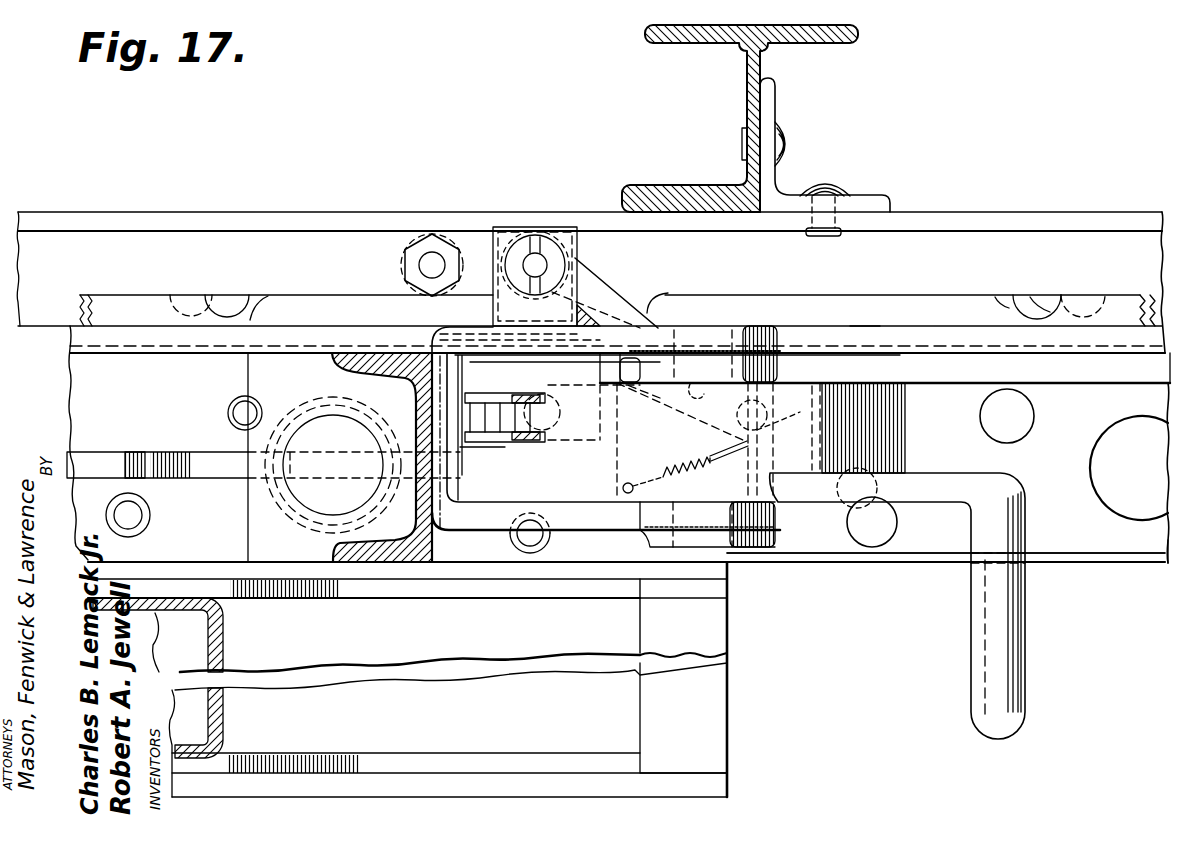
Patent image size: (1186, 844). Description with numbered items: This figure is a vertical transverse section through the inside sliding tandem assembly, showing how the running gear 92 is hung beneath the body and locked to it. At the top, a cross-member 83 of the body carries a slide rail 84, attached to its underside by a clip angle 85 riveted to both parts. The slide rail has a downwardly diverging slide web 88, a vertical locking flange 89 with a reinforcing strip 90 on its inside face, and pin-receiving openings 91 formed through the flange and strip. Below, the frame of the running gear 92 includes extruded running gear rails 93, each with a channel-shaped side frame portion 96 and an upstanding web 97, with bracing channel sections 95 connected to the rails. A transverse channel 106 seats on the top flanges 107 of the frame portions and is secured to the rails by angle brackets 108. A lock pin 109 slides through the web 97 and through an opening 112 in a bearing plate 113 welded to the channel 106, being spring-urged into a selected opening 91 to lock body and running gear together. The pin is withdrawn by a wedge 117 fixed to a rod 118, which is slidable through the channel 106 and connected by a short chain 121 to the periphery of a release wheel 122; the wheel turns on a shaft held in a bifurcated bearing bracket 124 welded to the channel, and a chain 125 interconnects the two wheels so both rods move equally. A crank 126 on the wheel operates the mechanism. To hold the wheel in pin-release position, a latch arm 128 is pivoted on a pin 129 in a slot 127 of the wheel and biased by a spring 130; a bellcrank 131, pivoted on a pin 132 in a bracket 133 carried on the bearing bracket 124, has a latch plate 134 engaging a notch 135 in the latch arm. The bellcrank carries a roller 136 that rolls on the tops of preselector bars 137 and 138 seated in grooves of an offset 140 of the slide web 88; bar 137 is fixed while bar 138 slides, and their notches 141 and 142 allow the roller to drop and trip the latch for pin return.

The cross-members 83 is at (800, 52).
The slide rails 84 is at (596, 204).
The clip angles 85 is at (782, 183).
The slide web 88 is at (960, 250).
The locking flange 89 is at (1082, 566).
The reinforcing strip 90 is at (1136, 560).
The pin-receiving openings 91 is at (1094, 479).
The running gear 92 is at (228, 652).
The running gear rails 93 is at (735, 722).
The bracing channel sections 95 is at (350, 598).
The channel-shaped side frame portion 96 is at (722, 688).
The upstanding web 97 is at (730, 572).
The channels 106 is at (414, 518).
The top flanges 107 is at (686, 598).
The angle brackets 108 is at (608, 547).
The lock pins 109 is at (304, 504).
The openings 112 is at (367, 428).
The bearing plates 113 is at (246, 432).
The wedges 117 is at (137, 452).
The rods 118 is at (82, 454).
The chain 121 is at (496, 494).
The release wheels 122 is at (904, 442).
The bifurcated bearing brackets 124 is at (566, 521).
The chain 125 is at (545, 438).
The crank 126 is at (1022, 650).
The slot 127 is at (617, 462).
The latch arm 128 is at (672, 402).
The pin 129 is at (770, 415).
The spring 130 is at (672, 471).
The bellcrank 131 is at (604, 284).
The pin 132 is at (541, 263).
The bracket 133 is at (507, 228).
The latch plate 134 is at (622, 358).
The notch 135 is at (704, 396).
The roller 136 is at (410, 274).
The preselector bar 137 is at (1040, 284).
The preselector bar 138 is at (868, 305).
The offset 140 is at (1108, 340).
The notch 141 is at (226, 298).
The notch 142 is at (212, 297).